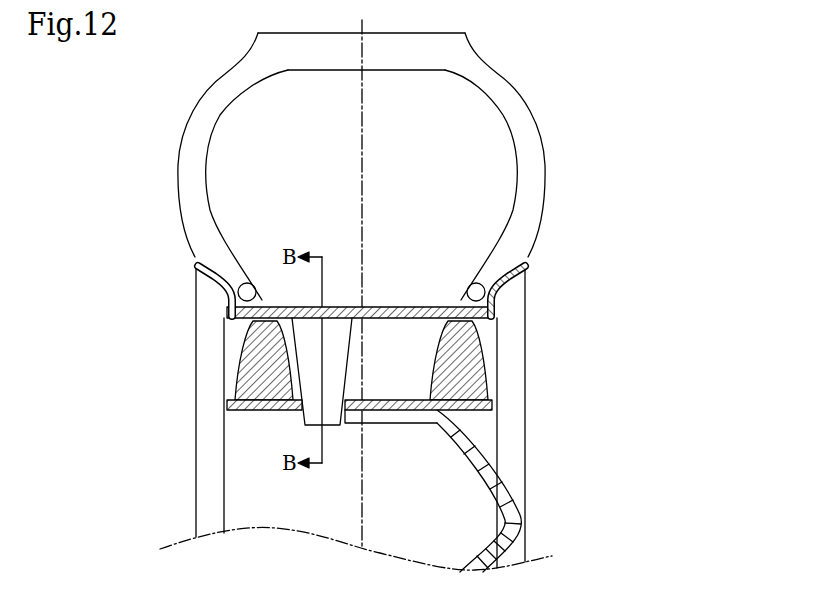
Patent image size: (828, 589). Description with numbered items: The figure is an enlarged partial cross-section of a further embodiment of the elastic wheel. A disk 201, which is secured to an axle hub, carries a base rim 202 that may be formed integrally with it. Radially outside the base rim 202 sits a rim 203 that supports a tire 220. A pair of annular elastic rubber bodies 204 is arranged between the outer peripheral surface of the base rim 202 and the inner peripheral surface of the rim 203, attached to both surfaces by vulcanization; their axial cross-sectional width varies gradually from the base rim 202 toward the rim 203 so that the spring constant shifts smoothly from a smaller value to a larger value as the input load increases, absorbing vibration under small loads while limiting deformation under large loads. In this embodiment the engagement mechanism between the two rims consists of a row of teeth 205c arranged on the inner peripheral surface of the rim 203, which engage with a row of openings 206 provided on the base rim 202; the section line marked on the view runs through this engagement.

The tire 220 is at (517, 113).
The rim 203 is at (523, 258).
The elastic rubber body 204 is at (247, 377).
The row of teeth 205c is at (341, 380).
The base rim 202 is at (490, 408).
The row of openings 206 is at (295, 411).
The disk 201 is at (522, 537).